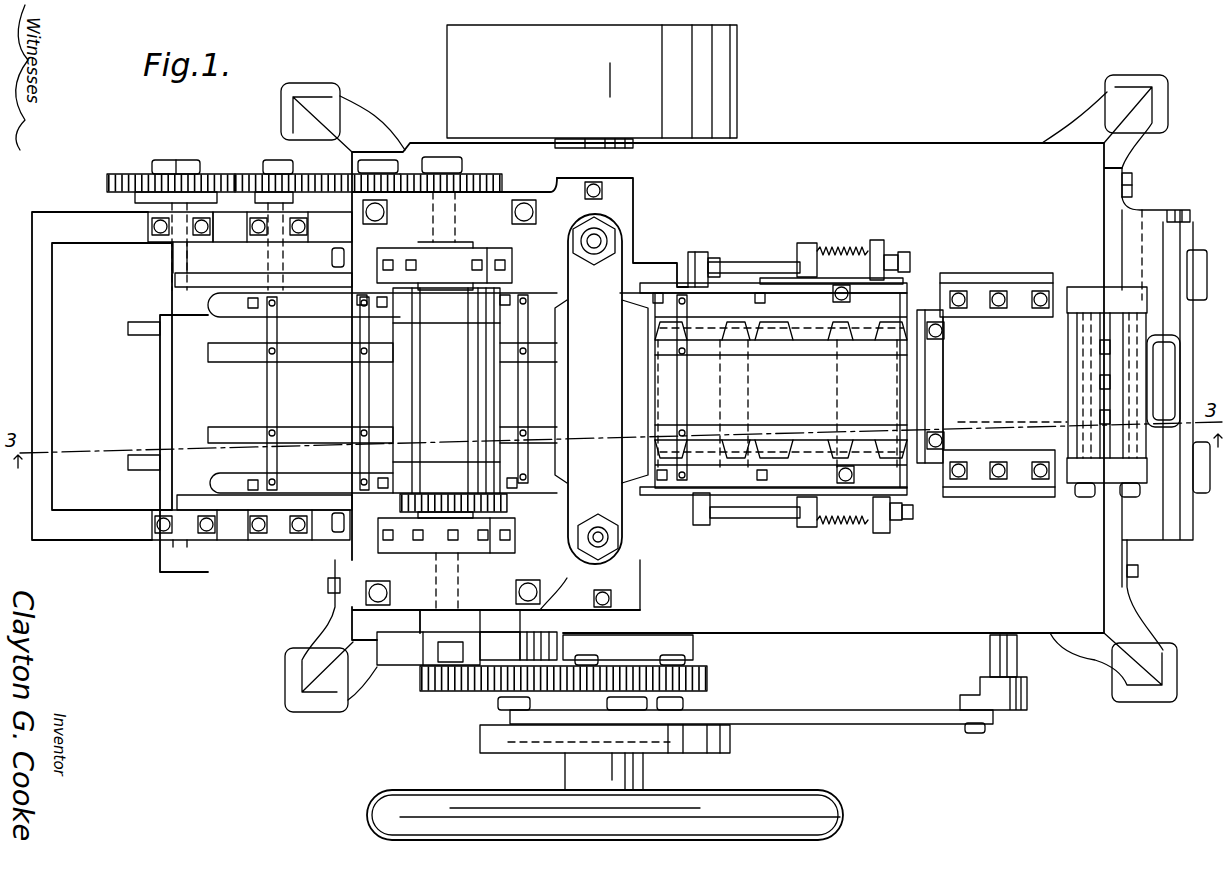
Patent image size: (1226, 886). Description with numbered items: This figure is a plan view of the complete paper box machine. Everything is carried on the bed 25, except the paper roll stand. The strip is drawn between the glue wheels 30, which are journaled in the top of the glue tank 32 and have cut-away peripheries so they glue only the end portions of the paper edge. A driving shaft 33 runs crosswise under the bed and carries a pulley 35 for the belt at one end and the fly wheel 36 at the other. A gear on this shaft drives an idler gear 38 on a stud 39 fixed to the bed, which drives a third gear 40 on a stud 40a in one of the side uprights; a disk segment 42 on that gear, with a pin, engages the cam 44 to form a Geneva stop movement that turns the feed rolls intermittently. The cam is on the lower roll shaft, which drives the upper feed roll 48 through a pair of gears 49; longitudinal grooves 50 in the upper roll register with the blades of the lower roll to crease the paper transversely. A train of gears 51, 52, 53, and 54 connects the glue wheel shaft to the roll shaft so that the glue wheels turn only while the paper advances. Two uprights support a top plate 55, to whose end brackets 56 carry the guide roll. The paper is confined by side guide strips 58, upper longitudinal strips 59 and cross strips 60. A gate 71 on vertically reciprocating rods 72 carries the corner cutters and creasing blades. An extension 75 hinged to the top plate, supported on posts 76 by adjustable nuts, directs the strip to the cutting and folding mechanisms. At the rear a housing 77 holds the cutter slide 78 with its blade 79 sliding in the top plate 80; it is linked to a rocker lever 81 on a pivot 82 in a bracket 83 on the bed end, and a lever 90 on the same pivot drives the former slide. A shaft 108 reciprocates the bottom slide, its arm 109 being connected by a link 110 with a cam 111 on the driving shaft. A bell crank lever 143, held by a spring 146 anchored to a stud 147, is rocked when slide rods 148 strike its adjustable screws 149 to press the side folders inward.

The bed 25 is at (729, 391).
The glue wheels 30 is at (137, 322).
The glue tank 32 is at (191, 376).
The driving shaft 33 is at (592, 140).
The pulley 35 is at (592, 81).
The fly wheel 36 is at (845, 815).
The idler gear 38 is at (708, 678).
The stud 39 is at (640, 647).
The third gear 40 is at (423, 695).
The stud 40a is at (551, 600).
The disk segment 42 is at (533, 653).
The cam 44 is at (398, 666).
The upper feed roll 48 is at (446, 390).
The gears 49 is at (507, 507).
The longitudinal grooves 50 is at (423, 423).
The gear 51 is at (118, 175).
The gear 52 is at (248, 175).
The gear 53 is at (333, 173).
The gear 54 is at (487, 168).
The top plate 55 is at (605, 232).
The brackets 56 is at (228, 288).
The longitudinal guide strips 58 is at (557, 389).
The longitudinal guide strips 59 is at (222, 357).
The cross guide strips 60 is at (268, 392).
The gate 71 is at (601, 389).
The vertically reciprocating rods 72 is at (603, 242).
The extension 75 is at (735, 283).
The posts 76 is at (833, 280).
The housing 77 is at (1018, 490).
The cutter slide 78 is at (1005, 383).
The blade 79 is at (920, 376).
The top plate 80 is at (1017, 293).
The rocker lever 81 is at (1133, 443).
The pivot 82 is at (1170, 552).
The bracket 83 is at (1125, 230).
The lever 90 is at (1163, 381).
The shaft 108 is at (1000, 650).
The arm 109 is at (983, 693).
The link 110 is at (858, 724).
The cam 111 is at (533, 748).
The bell crank lever 143 is at (878, 252).
The spring 146 is at (838, 528).
The stud 147 is at (798, 517).
The slide rods 148 is at (773, 262).
The adjustable screws 149 is at (910, 253).